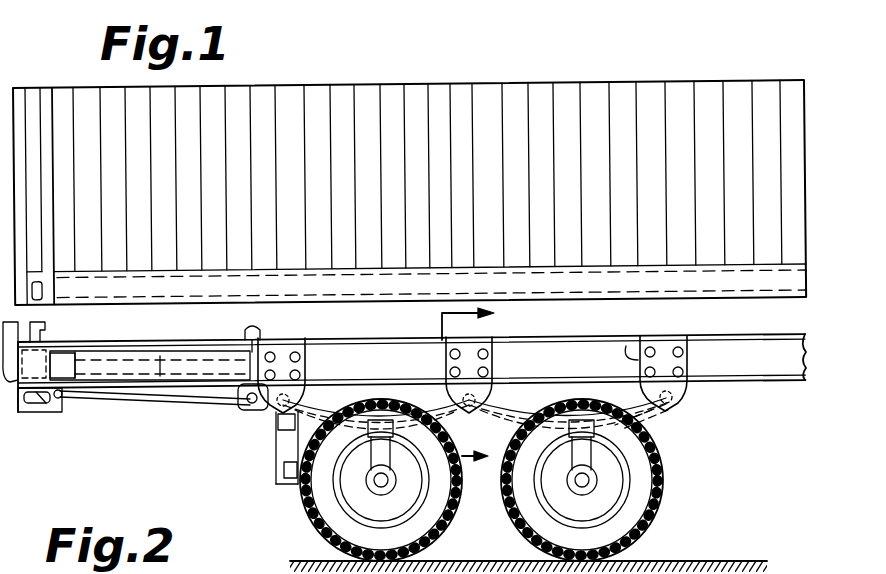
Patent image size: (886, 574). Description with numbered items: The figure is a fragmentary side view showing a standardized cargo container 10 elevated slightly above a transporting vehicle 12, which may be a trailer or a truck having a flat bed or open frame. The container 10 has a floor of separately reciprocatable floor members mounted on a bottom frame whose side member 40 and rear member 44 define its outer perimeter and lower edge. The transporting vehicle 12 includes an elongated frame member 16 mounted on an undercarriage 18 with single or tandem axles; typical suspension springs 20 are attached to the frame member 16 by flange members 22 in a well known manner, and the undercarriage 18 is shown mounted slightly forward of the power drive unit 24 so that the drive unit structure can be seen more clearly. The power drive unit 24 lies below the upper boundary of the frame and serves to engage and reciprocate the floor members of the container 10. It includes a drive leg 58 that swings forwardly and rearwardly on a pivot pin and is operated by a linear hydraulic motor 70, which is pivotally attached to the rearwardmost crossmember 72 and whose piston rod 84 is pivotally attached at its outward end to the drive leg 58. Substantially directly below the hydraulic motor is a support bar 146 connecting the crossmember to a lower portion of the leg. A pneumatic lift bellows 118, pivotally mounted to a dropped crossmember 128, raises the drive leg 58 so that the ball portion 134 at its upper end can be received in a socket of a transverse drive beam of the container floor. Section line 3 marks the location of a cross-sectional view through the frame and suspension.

The cargo container 10 is at (359, 82).
The transporting vehicle 12 is at (770, 390).
The elongated frame member 16 is at (719, 364).
The undercarriage 18 is at (672, 496).
The suspension springs 20 is at (668, 420).
The flange members 22 is at (306, 368).
The power drive unit 24 is at (136, 410).
The side member 40 is at (175, 300).
The rear member 44 is at (50, 306).
The drive leg 58 is at (222, 406).
The linear hydraulic motor 70 is at (90, 408).
The crossmember 72 is at (8, 408).
The piston rod 84 is at (196, 365).
The pneumatic lift bellows 118 is at (268, 448).
The dropped crossmember 128 is at (272, 484).
The ball portion 134 is at (261, 329).
The support bar 146 is at (167, 406).
The section line 3- 3 is at (476, 390).